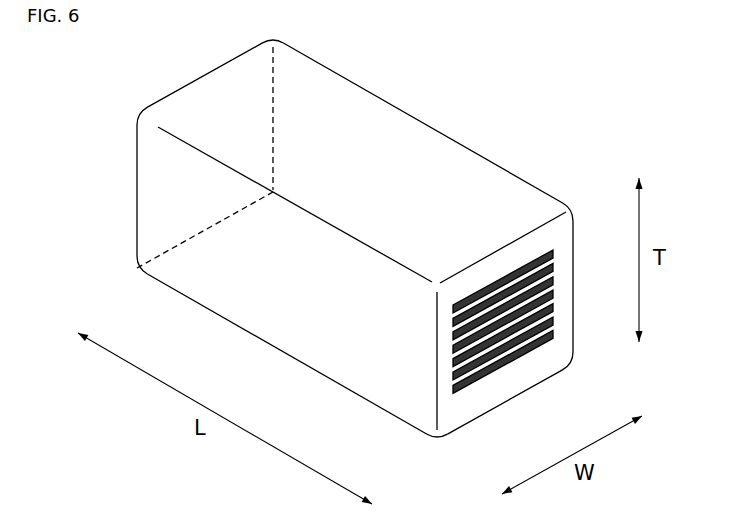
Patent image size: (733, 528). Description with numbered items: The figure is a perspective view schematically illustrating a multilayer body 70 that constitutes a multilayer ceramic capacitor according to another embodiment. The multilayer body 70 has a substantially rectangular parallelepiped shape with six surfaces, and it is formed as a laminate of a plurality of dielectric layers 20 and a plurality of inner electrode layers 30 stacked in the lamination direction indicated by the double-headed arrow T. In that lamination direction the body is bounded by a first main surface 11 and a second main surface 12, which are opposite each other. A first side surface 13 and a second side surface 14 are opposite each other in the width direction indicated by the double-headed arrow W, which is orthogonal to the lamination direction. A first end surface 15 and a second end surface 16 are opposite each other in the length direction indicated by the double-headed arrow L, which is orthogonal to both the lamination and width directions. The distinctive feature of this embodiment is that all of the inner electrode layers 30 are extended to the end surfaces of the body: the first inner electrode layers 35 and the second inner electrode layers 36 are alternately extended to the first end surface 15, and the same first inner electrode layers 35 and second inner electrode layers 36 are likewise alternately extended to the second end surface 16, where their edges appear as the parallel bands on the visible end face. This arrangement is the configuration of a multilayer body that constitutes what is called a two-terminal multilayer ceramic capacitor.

The multilayer body 70 is at (572, 117).
The first main surface 11 is at (368, 117).
The second main surface 12 is at (362, 362).
The first side surface 13 is at (218, 293).
The second side surface 14 is at (450, 173).
The first end surface 15 is at (155, 155).
The second end surface 16 is at (563, 267).
The dielectric layers 20 is at (559, 351).
The inner electrode layers 30 is at (503, 308).
The first inner electrode layers 35 is at (508, 358).
The second inner electrode layers 36 is at (550, 333).